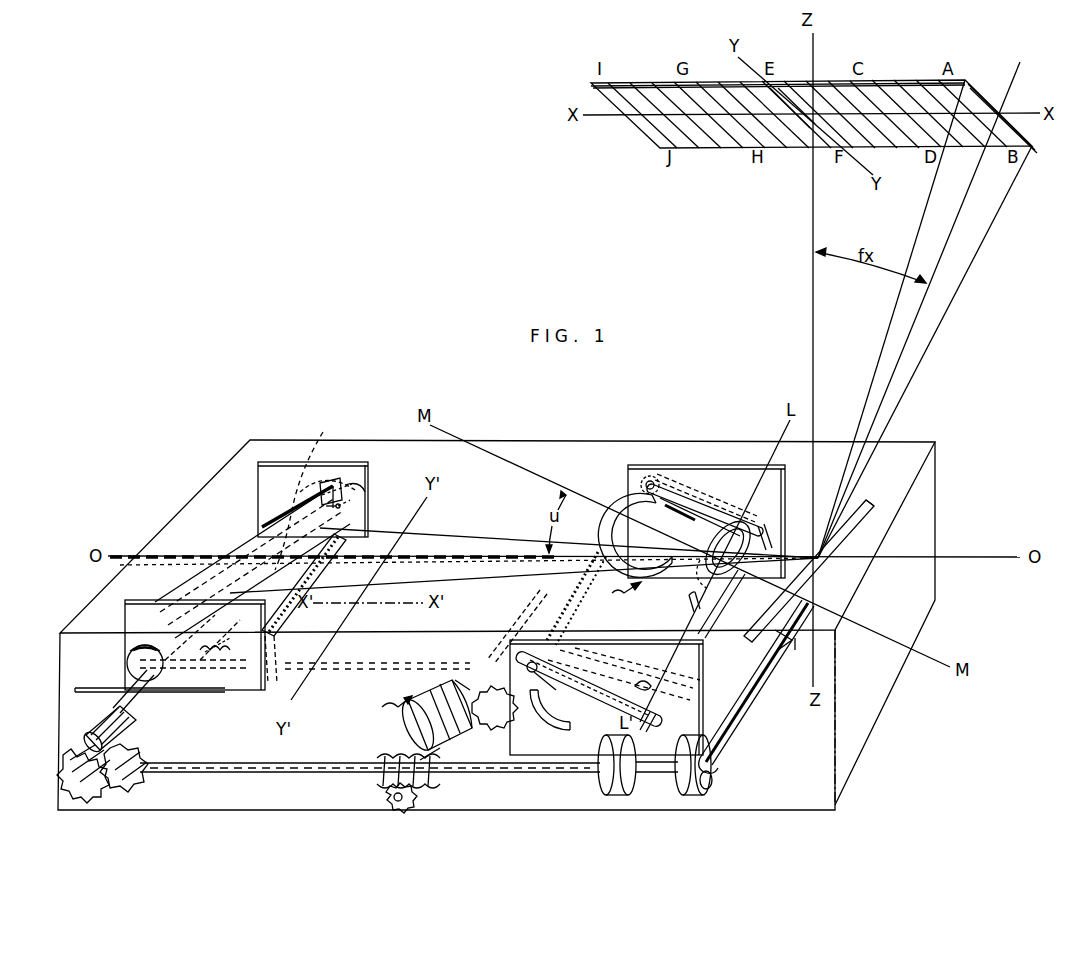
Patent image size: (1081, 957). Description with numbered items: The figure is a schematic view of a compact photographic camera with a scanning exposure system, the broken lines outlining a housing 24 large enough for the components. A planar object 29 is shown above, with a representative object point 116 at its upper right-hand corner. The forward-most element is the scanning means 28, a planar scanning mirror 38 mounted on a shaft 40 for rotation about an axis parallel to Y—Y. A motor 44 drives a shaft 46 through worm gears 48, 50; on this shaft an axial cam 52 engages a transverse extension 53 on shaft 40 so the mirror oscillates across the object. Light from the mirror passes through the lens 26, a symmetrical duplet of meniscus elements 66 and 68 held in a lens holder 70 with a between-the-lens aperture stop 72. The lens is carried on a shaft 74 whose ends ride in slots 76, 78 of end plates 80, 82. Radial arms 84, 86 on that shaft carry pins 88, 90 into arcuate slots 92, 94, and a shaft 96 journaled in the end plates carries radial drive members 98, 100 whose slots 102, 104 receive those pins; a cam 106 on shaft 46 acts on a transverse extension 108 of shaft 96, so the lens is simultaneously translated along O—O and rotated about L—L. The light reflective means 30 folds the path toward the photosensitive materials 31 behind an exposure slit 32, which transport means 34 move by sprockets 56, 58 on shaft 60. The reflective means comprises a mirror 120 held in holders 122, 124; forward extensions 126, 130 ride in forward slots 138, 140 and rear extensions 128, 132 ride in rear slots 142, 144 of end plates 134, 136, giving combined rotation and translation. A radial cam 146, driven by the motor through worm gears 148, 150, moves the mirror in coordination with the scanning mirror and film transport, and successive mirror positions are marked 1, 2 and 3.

The housing 24 is at (392, 440).
The lens 26 is at (613, 592).
The scanning means 28 is at (795, 638).
The object 29 is at (906, 89).
The light reflective means 30 is at (328, 434).
The photosensitive materials 31 is at (286, 668).
The exposure slit 32 is at (262, 560).
The transport means 34 is at (383, 708).
The scanning mirror 38 is at (812, 588).
The shaft 40 is at (786, 675).
The motor 44 is at (432, 732).
The shaft 46 is at (370, 778).
The worm gear 48 is at (378, 758).
The worm gear 50 is at (386, 794).
The axial cam 52 is at (712, 786).
The transverse extension 53 is at (706, 766).
The sprocket 56 is at (377, 656).
The sprocket 58 is at (548, 598).
The shaft 60 is at (497, 720).
The meniscus element 66 is at (735, 515).
The meniscus element 68 is at (767, 539).
The lens holder 70 is at (708, 602).
The aperture stop 72 is at (742, 572).
The shaft 74 is at (689, 602).
The slot 76 is at (652, 688).
The slot 78 is at (642, 520).
The end plate 80 is at (718, 664).
The end plate 82 is at (787, 486).
The radial arm 84 is at (626, 640).
The radial arm 86 is at (703, 511).
The pin 88 is at (556, 690).
The pin 90 is at (640, 486).
The arcuate slot 92 is at (534, 720).
The arcuate slot 94 is at (700, 570).
The shaft 96 is at (656, 716).
The radial drive member 98 is at (618, 708).
The radial drive member 100 is at (690, 472).
The slot 102 is at (498, 650).
The slot 104 is at (648, 476).
The cam 106 is at (612, 788).
The transverse extension 108 is at (648, 770).
The object point 116 is at (974, 91).
The mirror 120 is at (250, 542).
The holder 122 is at (175, 590).
The holder 124 is at (368, 472).
The forward transverse extension 126 is at (162, 663).
The rear transverse extension 128 is at (134, 655).
The forward transverse extension 130 is at (366, 490).
The rear transverse extension 132 is at (310, 464).
The end plate 134 is at (127, 640).
The end plate 136 is at (258, 470).
The forward slot 138 is at (218, 645).
The forward slot 140 is at (343, 505).
The rear slot 142 is at (270, 515).
The rear slot 144 is at (147, 633).
The radial cam 146 is at (140, 695).
The worm gear 148 is at (100, 720).
The worm gear 150 is at (128, 790).
The position 1 is at (237, 612).
The position 2 is at (191, 625).
The position 3 is at (153, 627).